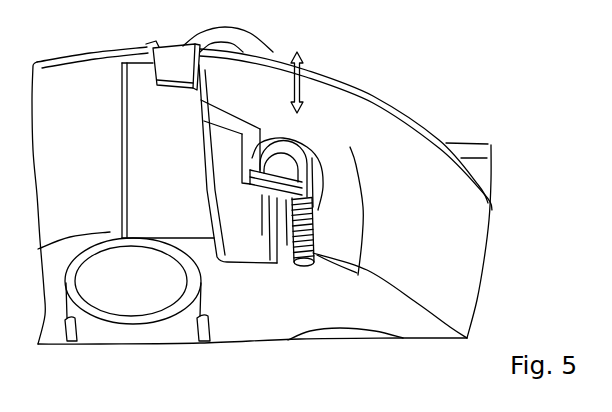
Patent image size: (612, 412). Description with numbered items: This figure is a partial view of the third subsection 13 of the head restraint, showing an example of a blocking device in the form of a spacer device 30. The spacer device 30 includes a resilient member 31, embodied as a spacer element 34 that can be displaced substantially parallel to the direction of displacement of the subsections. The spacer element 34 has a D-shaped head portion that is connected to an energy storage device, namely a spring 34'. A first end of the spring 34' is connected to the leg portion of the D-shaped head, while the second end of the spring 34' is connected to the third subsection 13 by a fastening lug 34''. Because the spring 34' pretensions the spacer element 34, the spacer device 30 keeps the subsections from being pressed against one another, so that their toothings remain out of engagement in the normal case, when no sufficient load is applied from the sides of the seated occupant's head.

The third subsection 13 is at (333, 80).
The spacer device 30 is at (377, 205).
The spacer element 34 is at (354, 165).
The resilient member 31 is at (310, 150).
The spring 34' is at (387, 161).
The fastening lug 34'' is at (421, 255).